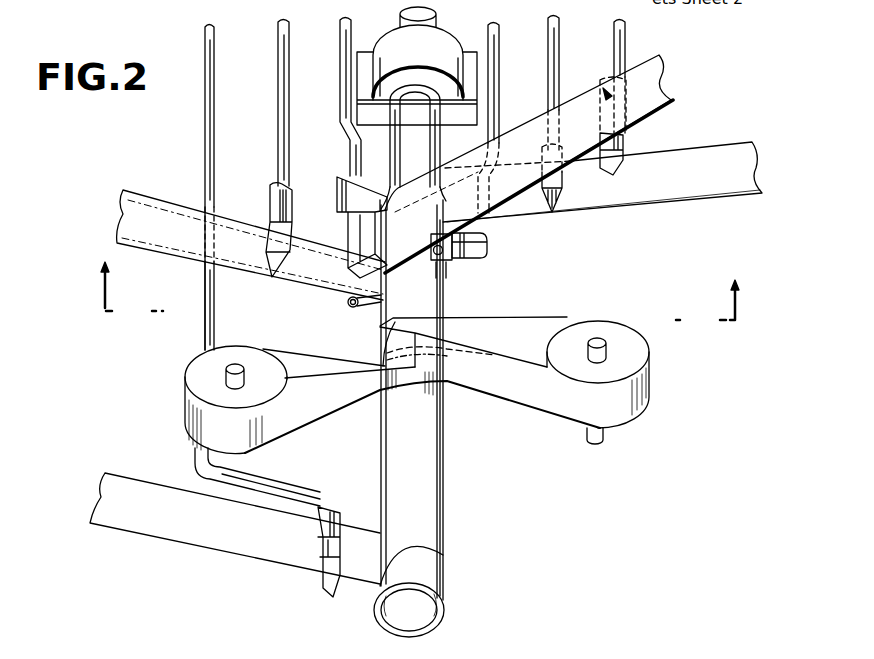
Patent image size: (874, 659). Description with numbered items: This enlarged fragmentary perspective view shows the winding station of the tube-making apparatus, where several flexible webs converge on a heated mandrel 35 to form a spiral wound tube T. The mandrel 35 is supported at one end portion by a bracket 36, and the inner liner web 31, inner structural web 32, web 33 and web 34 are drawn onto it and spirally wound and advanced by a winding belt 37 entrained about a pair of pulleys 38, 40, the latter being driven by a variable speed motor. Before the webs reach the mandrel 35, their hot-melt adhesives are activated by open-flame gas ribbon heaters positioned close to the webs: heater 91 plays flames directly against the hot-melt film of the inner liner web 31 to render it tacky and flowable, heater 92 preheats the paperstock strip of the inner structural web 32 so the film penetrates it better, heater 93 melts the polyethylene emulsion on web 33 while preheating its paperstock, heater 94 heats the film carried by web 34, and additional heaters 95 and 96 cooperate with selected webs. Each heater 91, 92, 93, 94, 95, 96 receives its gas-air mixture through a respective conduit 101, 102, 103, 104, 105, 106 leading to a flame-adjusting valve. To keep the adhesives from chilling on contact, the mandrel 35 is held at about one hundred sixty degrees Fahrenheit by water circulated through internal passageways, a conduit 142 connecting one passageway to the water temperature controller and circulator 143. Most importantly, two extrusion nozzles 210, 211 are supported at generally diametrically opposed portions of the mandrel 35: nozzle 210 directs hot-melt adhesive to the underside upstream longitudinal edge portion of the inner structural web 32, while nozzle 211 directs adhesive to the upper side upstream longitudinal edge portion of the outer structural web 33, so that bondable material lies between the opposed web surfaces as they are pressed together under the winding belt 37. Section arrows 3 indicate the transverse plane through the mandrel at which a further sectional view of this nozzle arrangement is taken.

The section line 3- 3 is at (415, 291).
The inner liner web 31 is at (592, 215).
The inner structural web 32 is at (678, 85).
The web 33 is at (243, 226).
The web 34 is at (289, 570).
The mandrel 35 is at (430, 134).
The bracket 36 is at (430, 59).
The winding belt 37 is at (338, 413).
The pulley 38 is at (274, 391).
The pulley 40 is at (584, 367).
The heater 91 is at (552, 210).
The heater 92 is at (627, 144).
The heater 93 is at (274, 247).
The heater 94 is at (326, 588).
The heater 95 is at (466, 260).
The heater 96 is at (329, 209).
The conduit 101 is at (568, 50).
The conduit 102 is at (625, 52).
The conduit 103 is at (280, 80).
The conduit 104 is at (206, 117).
The conduit 105 is at (499, 38).
The conduit 106 is at (340, 74).
The conduit 142 is at (404, 16).
The water temperature controller and circulator 143 is at (434, 12).
The extrusion nozzle 210 is at (447, 268).
The extrusion nozzle 211 is at (355, 308).
The spiral wound tube T is at (444, 584).